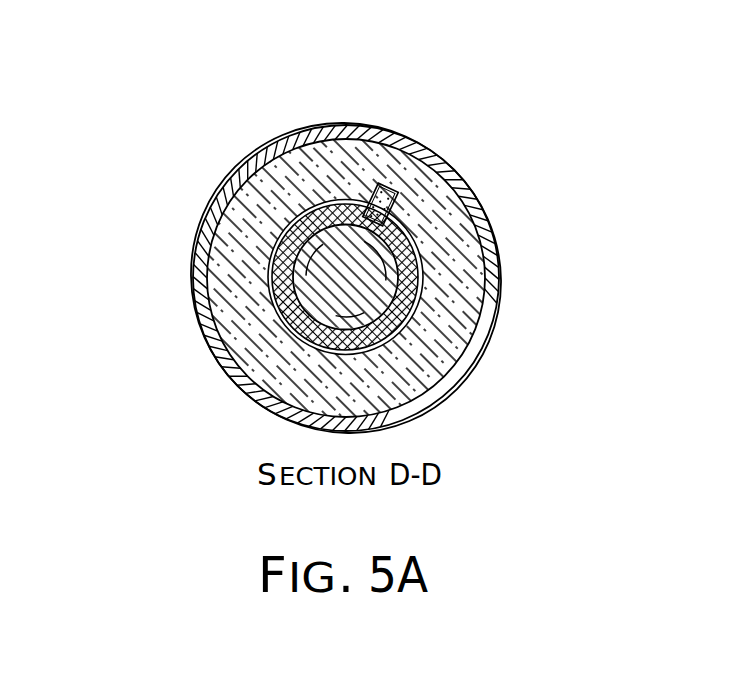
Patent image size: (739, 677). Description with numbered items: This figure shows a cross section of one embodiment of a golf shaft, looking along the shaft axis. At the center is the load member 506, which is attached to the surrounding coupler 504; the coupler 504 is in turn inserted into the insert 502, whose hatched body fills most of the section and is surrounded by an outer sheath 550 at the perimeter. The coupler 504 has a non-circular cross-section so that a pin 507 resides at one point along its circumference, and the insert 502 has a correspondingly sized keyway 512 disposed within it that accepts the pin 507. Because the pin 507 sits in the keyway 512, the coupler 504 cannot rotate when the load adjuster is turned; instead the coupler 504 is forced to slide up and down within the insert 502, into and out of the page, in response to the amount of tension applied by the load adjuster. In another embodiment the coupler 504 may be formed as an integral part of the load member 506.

The insert 502 is at (395, 278).
The coupler 504 is at (248, 252).
The load member 506 is at (330, 290).
The pin 507 is at (425, 157).
The keyway 512 is at (350, 148).
The outer sheath 550 is at (487, 310).